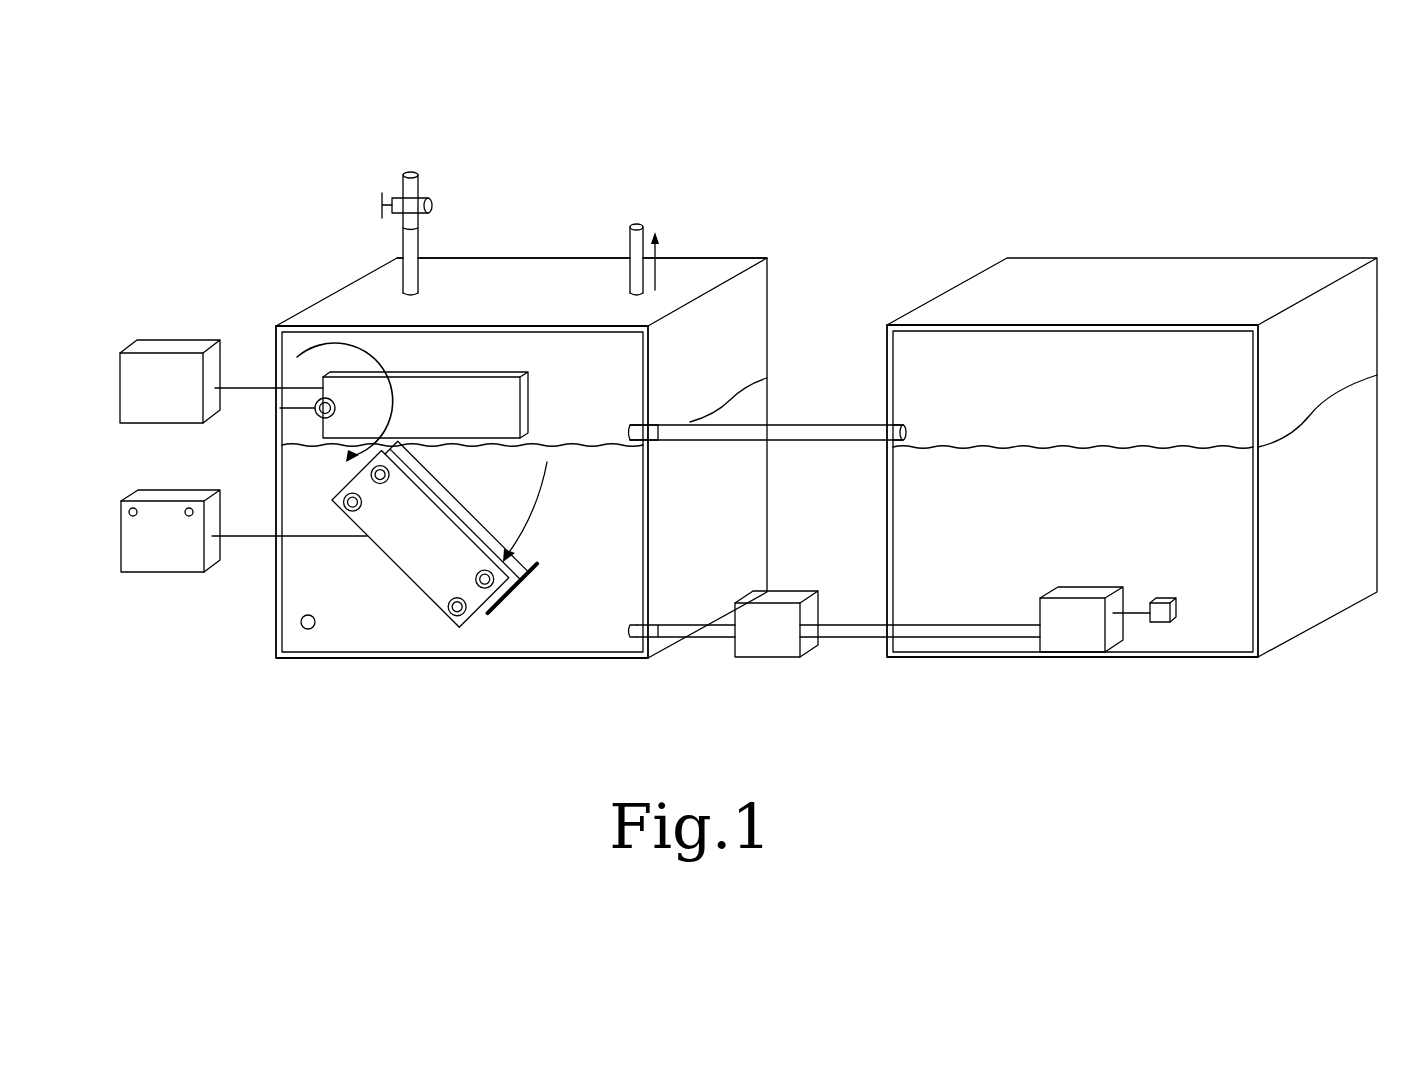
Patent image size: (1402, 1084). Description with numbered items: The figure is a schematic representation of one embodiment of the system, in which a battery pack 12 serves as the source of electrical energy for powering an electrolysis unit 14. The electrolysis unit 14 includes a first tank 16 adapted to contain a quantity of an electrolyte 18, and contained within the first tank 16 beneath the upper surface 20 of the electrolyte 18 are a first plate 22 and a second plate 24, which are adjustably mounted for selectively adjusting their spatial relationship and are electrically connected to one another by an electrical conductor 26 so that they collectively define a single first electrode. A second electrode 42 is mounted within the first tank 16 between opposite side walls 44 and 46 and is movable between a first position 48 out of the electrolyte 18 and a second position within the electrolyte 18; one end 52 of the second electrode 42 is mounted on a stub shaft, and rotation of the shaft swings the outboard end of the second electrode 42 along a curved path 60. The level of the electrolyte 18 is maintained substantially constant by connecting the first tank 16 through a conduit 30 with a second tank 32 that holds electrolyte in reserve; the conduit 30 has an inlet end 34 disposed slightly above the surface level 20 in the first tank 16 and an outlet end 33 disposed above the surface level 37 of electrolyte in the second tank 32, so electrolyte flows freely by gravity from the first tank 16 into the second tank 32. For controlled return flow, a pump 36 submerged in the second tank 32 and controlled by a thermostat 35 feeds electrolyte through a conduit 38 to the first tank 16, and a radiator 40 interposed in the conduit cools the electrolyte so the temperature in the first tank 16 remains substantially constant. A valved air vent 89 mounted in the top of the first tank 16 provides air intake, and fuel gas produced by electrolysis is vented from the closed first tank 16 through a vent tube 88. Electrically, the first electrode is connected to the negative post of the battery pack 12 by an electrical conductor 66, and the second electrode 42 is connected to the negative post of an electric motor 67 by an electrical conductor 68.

The battery pack 12 is at (121, 512).
The electrolysis unit 14 is at (240, 276).
The first tank 16 is at (647, 588).
The electrolyte 18 is at (612, 456).
The upper surface 20 is at (292, 436).
The first plate 22 is at (425, 598).
The second plate 24 is at (498, 604).
The electrical conductor 26 is at (515, 585).
The conduit 30 is at (812, 438).
The second tank 32 is at (1100, 258).
The outlet end 33 is at (903, 430).
The inlet end 34 is at (630, 430).
The thermostat 35 is at (1167, 603).
The pump 36 is at (1083, 638).
The surface level 37 is at (1213, 447).
The conduit 38 is at (872, 638).
The radiator 40 is at (768, 658).
The second electrode 42 is at (505, 372).
The side wall 44 is at (530, 262).
The side wall 46 is at (340, 325).
The first position 48 is at (468, 368).
The end 52 is at (395, 400).
The curved path 60 is at (560, 495).
The electrical conductor 66 is at (252, 538).
The electric motor 67 is at (160, 350).
The electrical conductor 68 is at (247, 388).
The vent tube 88 is at (630, 240).
The valved air vent 89 is at (422, 240).